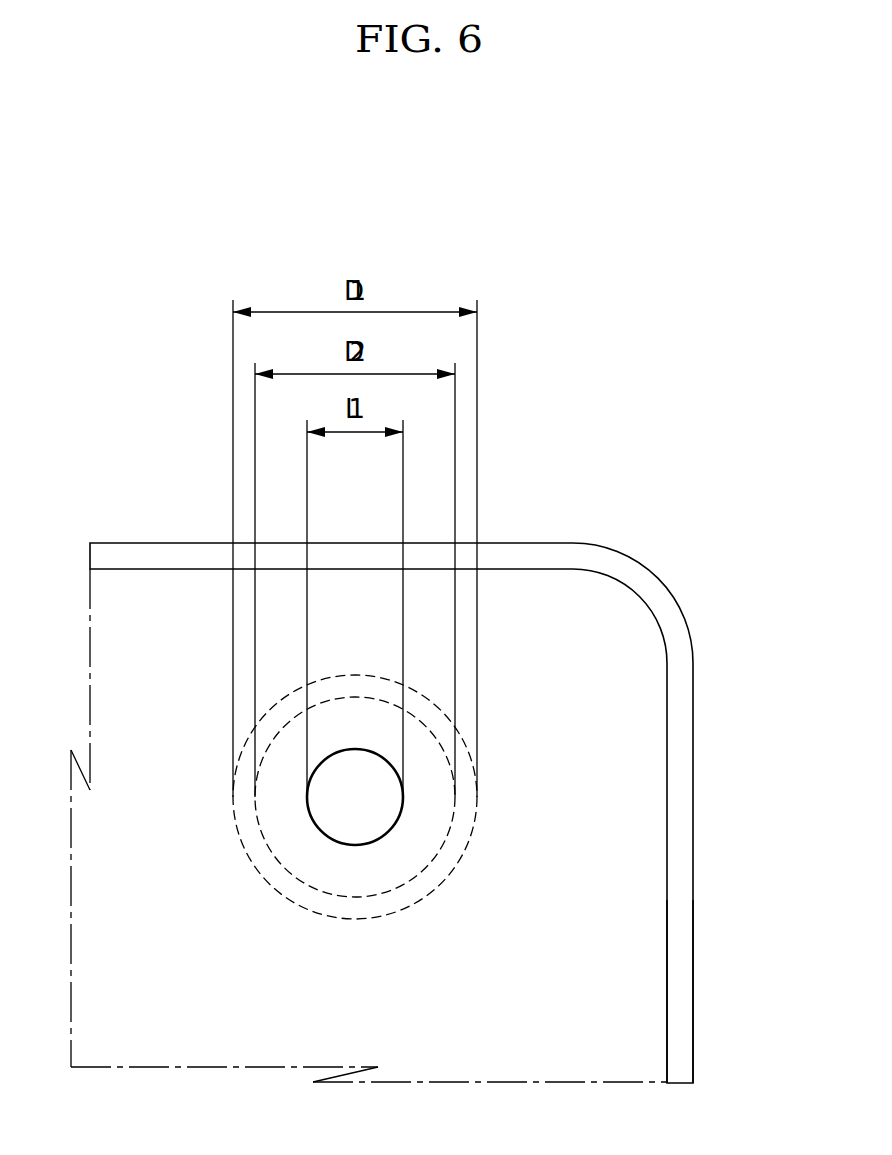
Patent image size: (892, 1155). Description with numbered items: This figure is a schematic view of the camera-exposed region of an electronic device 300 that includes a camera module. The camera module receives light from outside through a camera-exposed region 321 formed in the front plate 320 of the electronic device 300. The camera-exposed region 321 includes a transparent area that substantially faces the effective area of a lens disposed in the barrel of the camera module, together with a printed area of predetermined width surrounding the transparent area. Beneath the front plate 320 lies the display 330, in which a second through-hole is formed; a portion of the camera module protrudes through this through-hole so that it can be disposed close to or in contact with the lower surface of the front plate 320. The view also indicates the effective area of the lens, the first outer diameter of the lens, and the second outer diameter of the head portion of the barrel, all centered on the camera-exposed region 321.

The electronic device 300 is at (435, 783).
The front plate 320 is at (605, 703).
The camera-exposed region 321 is at (353, 808).
The display 330 is at (606, 980).